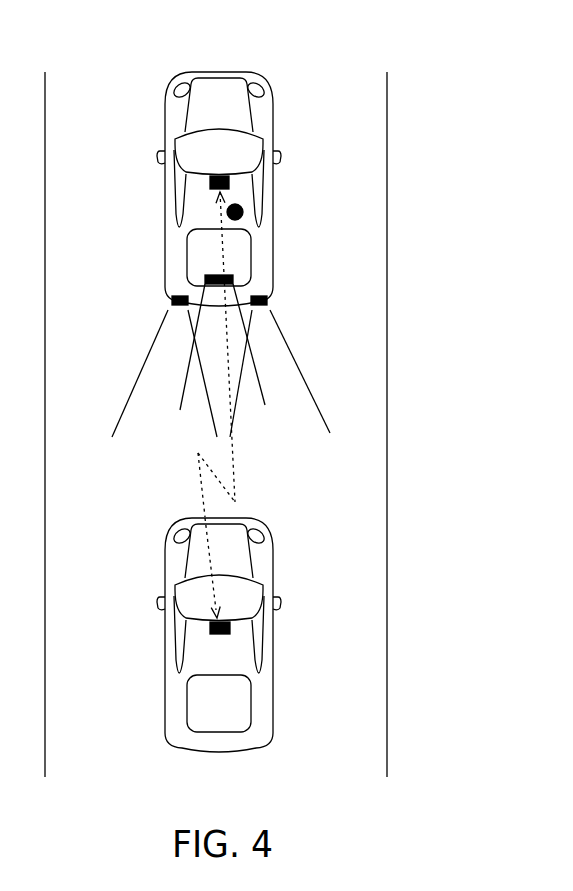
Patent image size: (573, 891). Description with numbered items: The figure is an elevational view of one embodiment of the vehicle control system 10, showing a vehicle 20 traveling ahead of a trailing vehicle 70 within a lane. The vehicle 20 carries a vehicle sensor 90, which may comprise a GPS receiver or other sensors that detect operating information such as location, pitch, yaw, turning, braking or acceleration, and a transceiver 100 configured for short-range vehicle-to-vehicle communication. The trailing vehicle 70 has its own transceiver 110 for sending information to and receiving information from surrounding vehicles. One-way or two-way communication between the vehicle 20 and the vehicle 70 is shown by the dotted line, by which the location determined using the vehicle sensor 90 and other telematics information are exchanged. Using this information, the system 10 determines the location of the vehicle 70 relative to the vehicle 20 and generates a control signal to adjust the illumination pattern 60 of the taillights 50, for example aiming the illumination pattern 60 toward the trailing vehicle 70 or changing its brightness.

The vehicle control system 10 is at (437, 50).
The vehicle 20 is at (288, 117).
The taillights 50 is at (205, 279).
The illumination pattern 60 is at (293, 413).
The trailing vehicle 70 is at (275, 558).
The vehicle sensor 90 is at (243, 210).
The transceiver 100 is at (210, 184).
The transceiver 110 is at (230, 632).